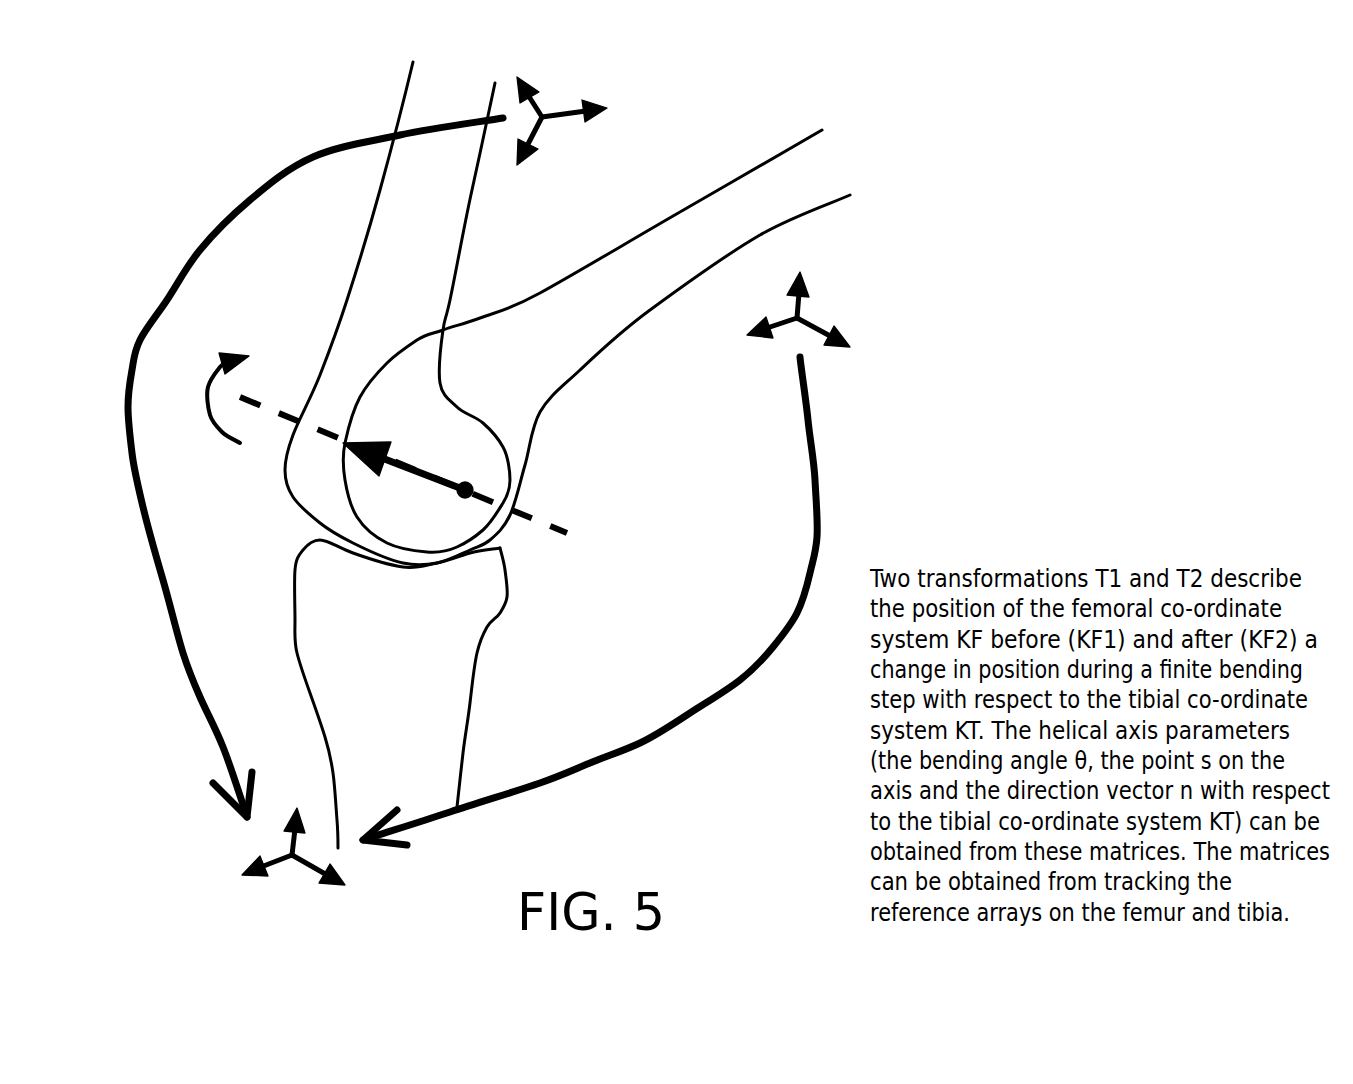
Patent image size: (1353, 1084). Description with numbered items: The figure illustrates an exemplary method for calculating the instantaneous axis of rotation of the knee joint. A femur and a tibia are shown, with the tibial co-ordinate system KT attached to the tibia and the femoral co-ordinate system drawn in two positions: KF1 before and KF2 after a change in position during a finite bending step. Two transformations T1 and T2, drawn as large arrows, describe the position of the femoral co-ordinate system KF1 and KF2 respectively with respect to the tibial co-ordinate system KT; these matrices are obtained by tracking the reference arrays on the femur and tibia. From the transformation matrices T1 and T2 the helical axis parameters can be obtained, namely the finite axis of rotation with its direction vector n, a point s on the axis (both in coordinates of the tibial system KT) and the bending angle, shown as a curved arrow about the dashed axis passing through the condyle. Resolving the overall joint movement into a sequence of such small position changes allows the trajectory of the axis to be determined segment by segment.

The transformation matrix T1 is at (303, 467).
The transformation matrix T2 is at (629, 601).
The femoral co-ordinate system before bending KF1 is at (566, 113).
The femoral co-ordinate system after bending KF2 is at (821, 309).
The tibial co-ordinate system KT is at (261, 849).
The direction vector n is at (404, 454).
The point on the axis s is at (477, 475).